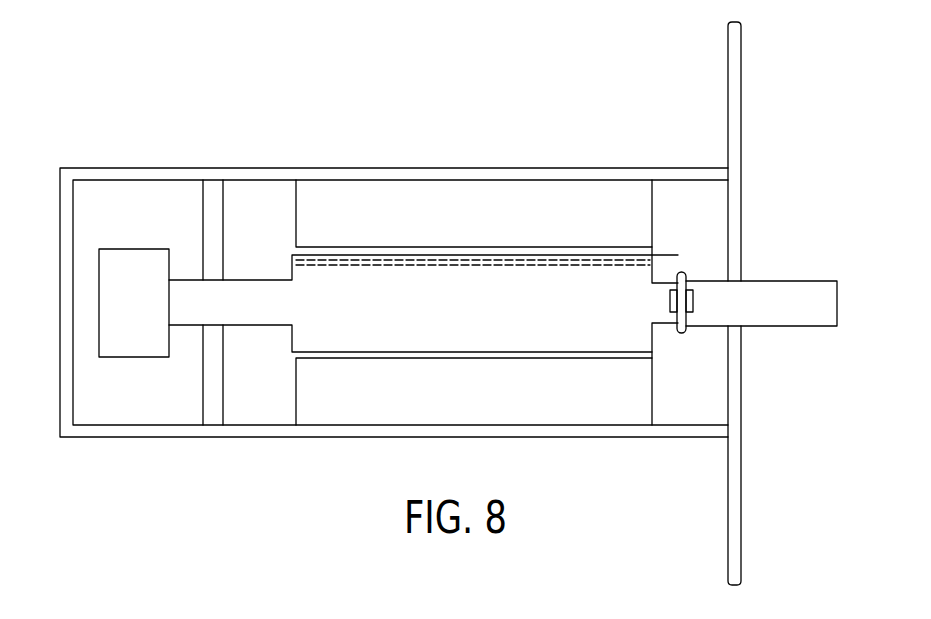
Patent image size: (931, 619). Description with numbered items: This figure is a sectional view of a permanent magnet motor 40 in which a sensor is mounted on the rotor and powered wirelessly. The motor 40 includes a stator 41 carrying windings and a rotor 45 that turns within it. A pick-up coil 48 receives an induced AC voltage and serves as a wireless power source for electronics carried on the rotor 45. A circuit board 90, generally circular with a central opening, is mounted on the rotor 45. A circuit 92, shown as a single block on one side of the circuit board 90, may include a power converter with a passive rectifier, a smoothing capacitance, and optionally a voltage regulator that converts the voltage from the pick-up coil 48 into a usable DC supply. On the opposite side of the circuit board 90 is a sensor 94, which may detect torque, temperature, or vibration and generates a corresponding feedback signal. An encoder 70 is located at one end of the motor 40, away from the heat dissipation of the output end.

The permanent magnet motor 40 is at (131, 135).
The stator 41 is at (488, 226).
The rotor 45 is at (488, 318).
The pick-up coil 48 is at (292, 262).
The encoder 70 is at (150, 248).
The circuit board 90 is at (680, 275).
The circuit 92 is at (670, 302).
The sensor 94 is at (694, 300).